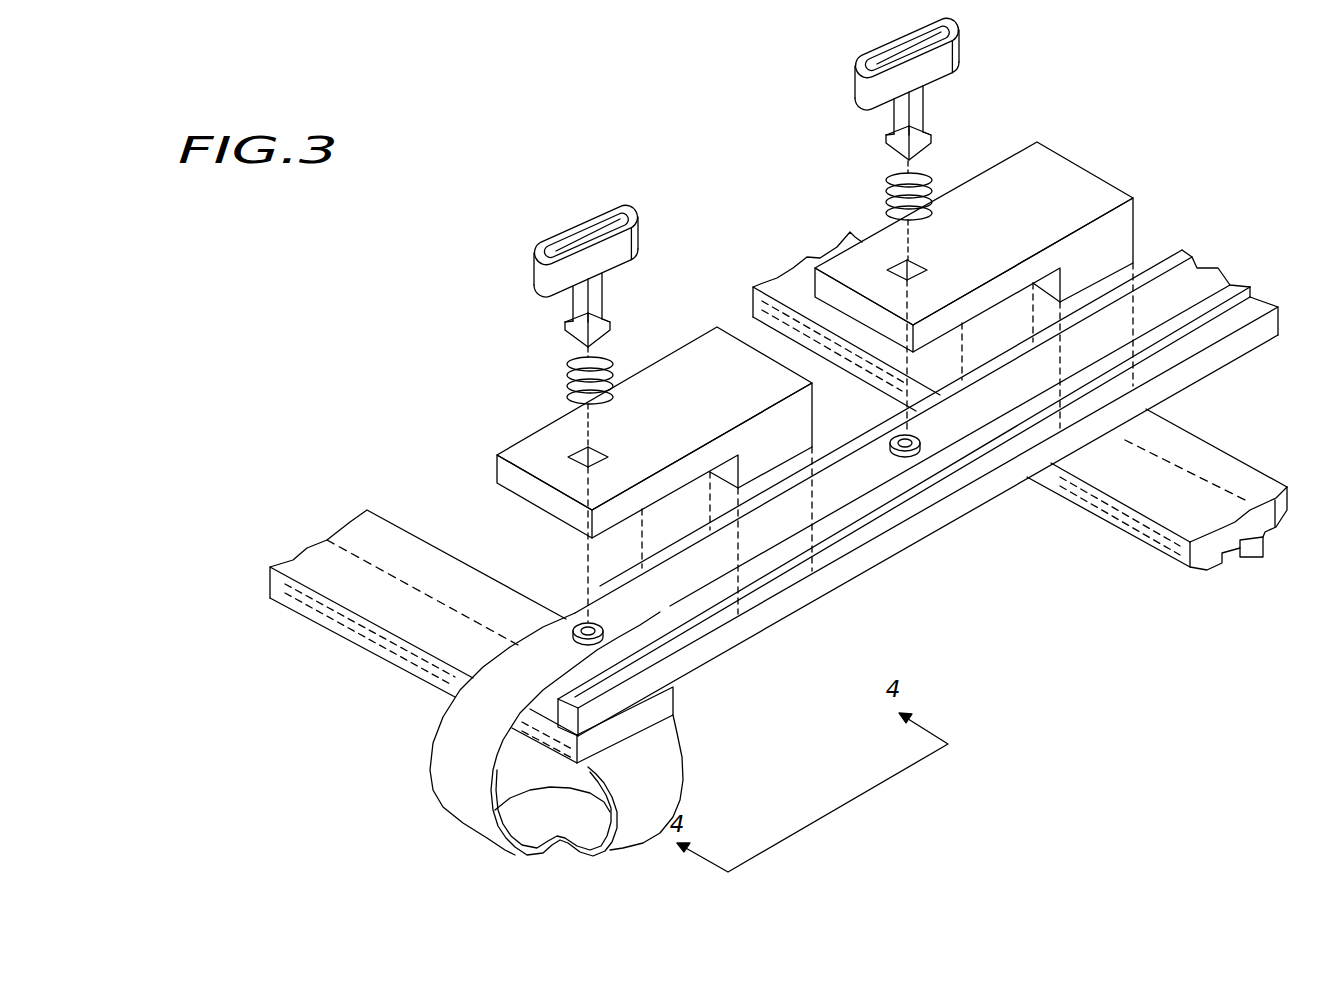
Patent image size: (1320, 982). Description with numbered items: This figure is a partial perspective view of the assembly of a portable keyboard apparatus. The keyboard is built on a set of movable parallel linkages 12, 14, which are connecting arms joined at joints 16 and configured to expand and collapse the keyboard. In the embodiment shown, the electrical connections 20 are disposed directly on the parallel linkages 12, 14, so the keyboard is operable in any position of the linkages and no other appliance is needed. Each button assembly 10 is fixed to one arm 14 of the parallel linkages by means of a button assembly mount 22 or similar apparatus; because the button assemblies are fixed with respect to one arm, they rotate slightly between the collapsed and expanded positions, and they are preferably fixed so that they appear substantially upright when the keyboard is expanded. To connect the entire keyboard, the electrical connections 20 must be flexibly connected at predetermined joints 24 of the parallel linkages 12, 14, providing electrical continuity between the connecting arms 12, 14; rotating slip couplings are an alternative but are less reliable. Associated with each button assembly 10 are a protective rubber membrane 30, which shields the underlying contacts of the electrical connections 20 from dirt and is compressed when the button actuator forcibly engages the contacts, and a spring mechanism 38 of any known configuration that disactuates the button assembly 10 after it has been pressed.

The button assembly 10 is at (522, 233).
The parallel linkage 12 is at (347, 646).
The parallel linkage arm 14 is at (847, 583).
The joint 16 is at (1016, 520).
The electrical connections 20 is at (862, 497).
The button assembly mount 22 is at (530, 442).
The predetermined joint 24 is at (695, 757).
The protective rubber membrane 30 is at (588, 623).
The spring mechanism 38 is at (570, 382).